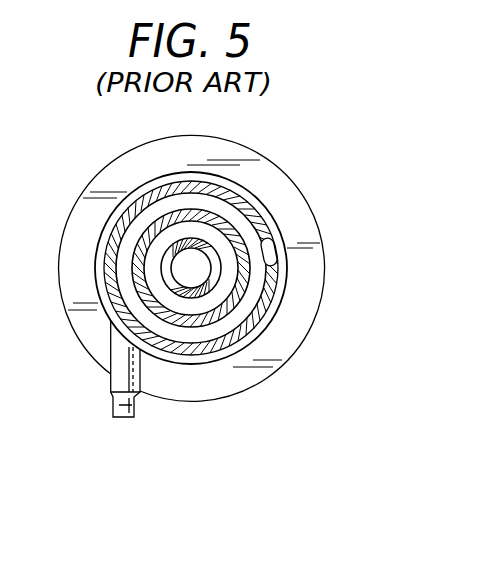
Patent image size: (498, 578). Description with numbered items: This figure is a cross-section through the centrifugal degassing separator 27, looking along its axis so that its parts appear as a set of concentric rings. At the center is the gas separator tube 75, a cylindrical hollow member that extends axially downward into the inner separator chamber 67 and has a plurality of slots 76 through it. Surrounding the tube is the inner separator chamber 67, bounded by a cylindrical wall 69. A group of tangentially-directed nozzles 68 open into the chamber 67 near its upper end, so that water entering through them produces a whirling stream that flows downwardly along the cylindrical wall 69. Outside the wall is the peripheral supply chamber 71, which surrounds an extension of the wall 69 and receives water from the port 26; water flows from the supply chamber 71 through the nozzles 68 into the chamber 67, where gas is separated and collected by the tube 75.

The port 26 is at (122, 418).
The centrifugal degassing separator 27 is at (233, 394).
The inner separator chamber 67 is at (158, 252).
The tangentially-directed nozzles 68 is at (190, 210).
The cylindrical wall 69 is at (274, 260).
The peripheral supply chamber 71 is at (240, 317).
The gas separator tube 75 is at (198, 240).
The slots 76 is at (140, 267).